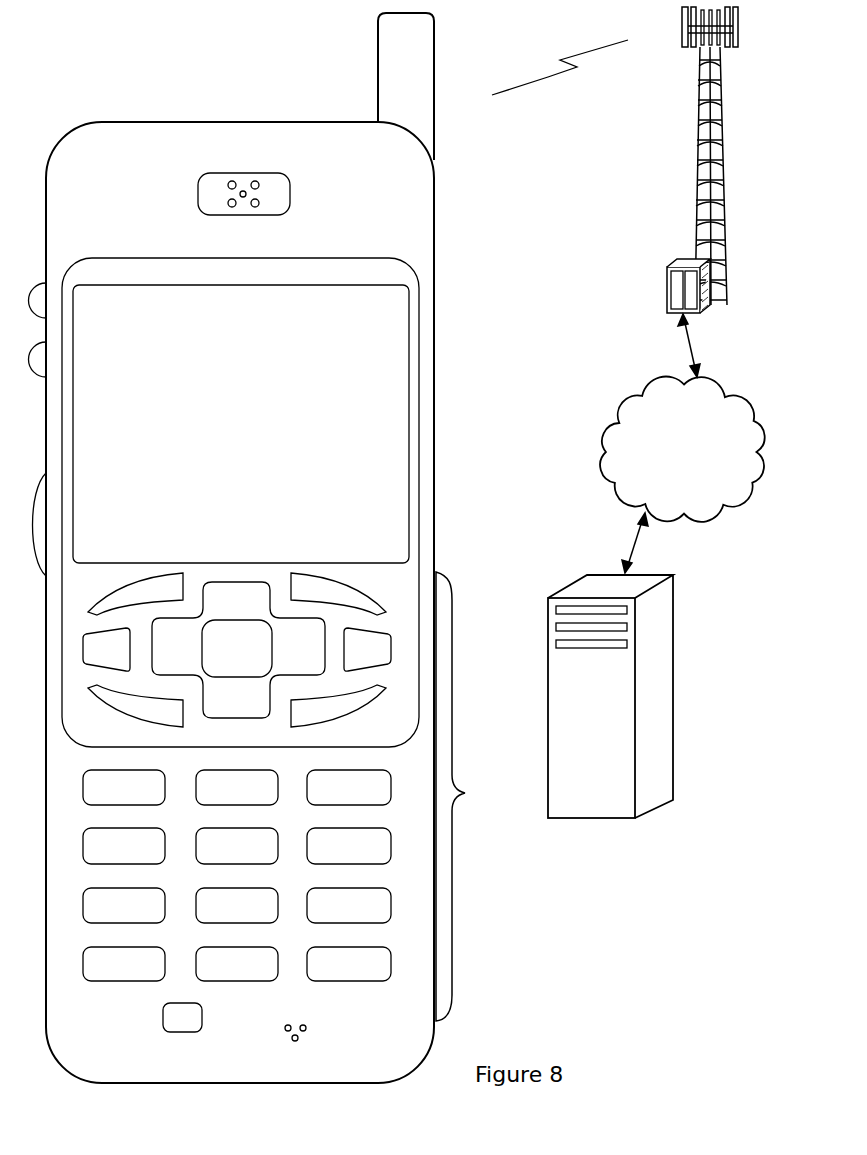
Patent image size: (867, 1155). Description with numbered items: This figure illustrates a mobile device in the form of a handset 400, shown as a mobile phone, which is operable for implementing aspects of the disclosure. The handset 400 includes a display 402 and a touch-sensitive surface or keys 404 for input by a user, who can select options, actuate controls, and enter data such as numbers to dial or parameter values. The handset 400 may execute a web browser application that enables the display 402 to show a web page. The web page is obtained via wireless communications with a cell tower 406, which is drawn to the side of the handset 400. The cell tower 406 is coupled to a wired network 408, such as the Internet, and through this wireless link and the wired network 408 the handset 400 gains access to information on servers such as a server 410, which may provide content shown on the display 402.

The handset 400 is at (84, 1078).
The display 402 is at (442, 294).
The touch-sensitive surface or keys 404 is at (476, 796).
The cell tower 406 is at (692, 172).
The wired network 408 is at (606, 490).
The server 410 is at (590, 818).